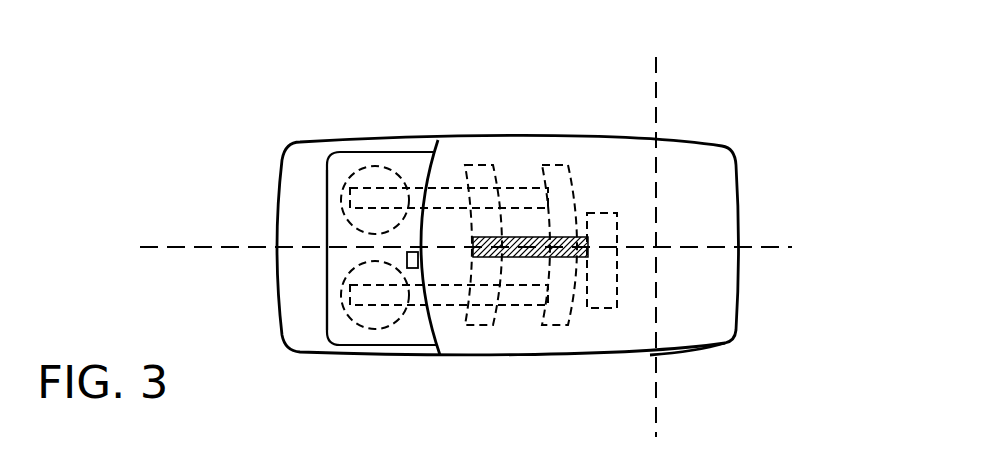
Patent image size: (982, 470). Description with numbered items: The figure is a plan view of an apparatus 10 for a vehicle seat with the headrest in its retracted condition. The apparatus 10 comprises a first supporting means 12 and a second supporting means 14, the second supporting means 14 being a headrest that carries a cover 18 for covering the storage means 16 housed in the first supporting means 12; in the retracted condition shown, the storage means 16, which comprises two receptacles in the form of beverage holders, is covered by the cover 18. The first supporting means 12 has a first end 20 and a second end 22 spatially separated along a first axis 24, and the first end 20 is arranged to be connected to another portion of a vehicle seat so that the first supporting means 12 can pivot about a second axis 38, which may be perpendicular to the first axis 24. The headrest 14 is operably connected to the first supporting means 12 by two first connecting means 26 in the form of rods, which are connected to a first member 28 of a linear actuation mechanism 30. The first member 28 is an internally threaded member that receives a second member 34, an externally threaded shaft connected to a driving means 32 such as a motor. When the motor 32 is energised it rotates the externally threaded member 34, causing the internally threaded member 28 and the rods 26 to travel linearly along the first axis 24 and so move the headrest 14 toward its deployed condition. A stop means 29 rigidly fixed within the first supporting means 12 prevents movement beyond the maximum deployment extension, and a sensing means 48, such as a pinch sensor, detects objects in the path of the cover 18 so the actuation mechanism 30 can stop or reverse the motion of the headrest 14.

The apparatus 10 is at (293, 95).
The first supporting means 12 is at (720, 170).
The second supporting means 14 is at (297, 178).
The storage means 16 is at (375, 168).
The cover 18 is at (337, 254).
The first end 20 is at (717, 332).
The second end 22 is at (347, 328).
The first axis 24 is at (775, 248).
The first connecting means 26 is at (442, 188).
The first member 28 is at (563, 318).
The stop means 29 is at (483, 178).
The actuation mechanism 30 is at (598, 167).
The driving means 32 is at (603, 282).
The second member 34 is at (518, 240).
The second axis 38 is at (657, 427).
The sensing means 48 is at (407, 257).